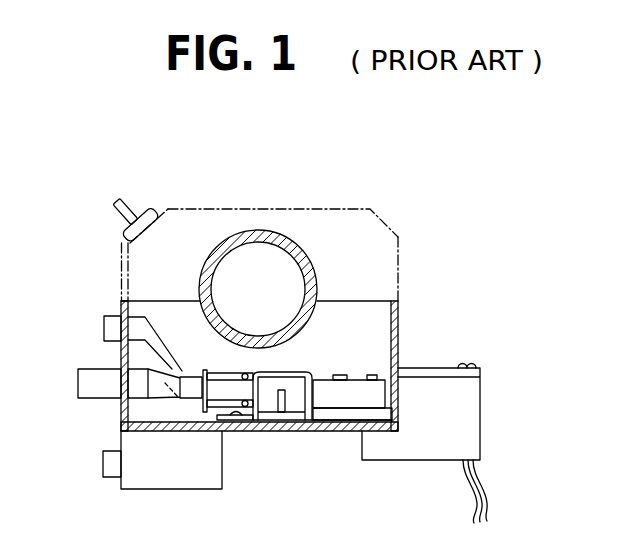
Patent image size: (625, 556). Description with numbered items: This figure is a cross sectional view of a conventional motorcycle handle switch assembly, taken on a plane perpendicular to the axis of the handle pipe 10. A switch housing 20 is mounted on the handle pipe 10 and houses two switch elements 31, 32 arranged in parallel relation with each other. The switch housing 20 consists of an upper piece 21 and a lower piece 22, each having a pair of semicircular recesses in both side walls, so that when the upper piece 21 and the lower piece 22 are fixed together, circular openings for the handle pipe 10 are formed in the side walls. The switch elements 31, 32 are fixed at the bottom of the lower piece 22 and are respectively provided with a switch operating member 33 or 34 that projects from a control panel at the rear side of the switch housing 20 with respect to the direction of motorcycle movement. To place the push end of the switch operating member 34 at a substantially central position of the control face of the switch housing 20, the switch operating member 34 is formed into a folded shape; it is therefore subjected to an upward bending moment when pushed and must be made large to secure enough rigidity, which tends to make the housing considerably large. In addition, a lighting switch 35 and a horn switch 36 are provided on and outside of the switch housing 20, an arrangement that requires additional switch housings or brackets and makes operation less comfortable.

The handle pipe 10 is at (284, 228).
The switch housing 20 is at (426, 232).
The upper piece 21 is at (370, 209).
The lower piece 22 is at (400, 313).
The switch element 31 is at (312, 362).
The switch element 32 is at (398, 373).
The switch operating member 33 is at (78, 378).
The switch operating member 34 is at (104, 322).
The lighting switch 35 is at (134, 193).
The horn switch 36 is at (96, 471).